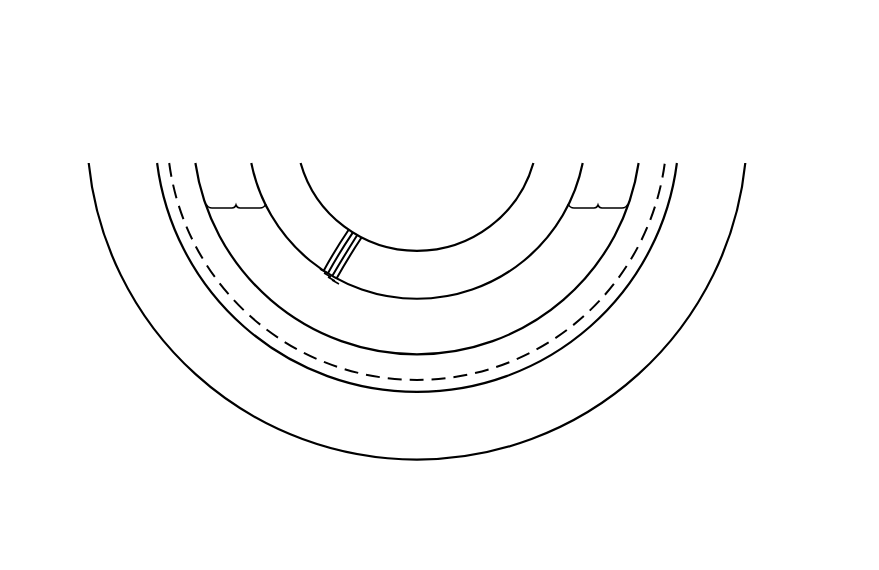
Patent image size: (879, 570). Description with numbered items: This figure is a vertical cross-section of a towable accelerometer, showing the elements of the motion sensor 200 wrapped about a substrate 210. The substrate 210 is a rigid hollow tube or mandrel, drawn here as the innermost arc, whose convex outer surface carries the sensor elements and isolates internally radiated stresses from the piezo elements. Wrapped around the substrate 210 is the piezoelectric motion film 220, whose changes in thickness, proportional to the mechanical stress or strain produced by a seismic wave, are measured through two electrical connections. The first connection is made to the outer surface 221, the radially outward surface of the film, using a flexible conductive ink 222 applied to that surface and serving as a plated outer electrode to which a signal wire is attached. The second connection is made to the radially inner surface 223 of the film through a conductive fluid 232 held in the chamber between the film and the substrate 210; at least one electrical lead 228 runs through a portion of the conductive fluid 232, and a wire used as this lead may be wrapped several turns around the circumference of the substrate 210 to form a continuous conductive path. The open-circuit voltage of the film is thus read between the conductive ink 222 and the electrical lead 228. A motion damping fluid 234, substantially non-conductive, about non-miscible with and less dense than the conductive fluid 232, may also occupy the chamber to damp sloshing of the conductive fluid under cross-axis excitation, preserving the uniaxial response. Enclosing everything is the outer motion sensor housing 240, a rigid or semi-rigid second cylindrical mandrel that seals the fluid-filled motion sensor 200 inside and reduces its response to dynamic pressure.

The motion sensor 200 is at (126, 49).
The substrate 210 is at (311, 188).
The piezoelectric motion film 220 is at (182, 152).
The outer surface 221 is at (316, 362).
The conductive ink 222 is at (253, 334).
The radially inner surface 223 is at (315, 328).
The electrical lead 228 is at (363, 220).
The conductive fluid 232 is at (586, 248).
The motion damping fluid 234 is at (614, 157).
The outer motion sensor housing 240 is at (249, 410).